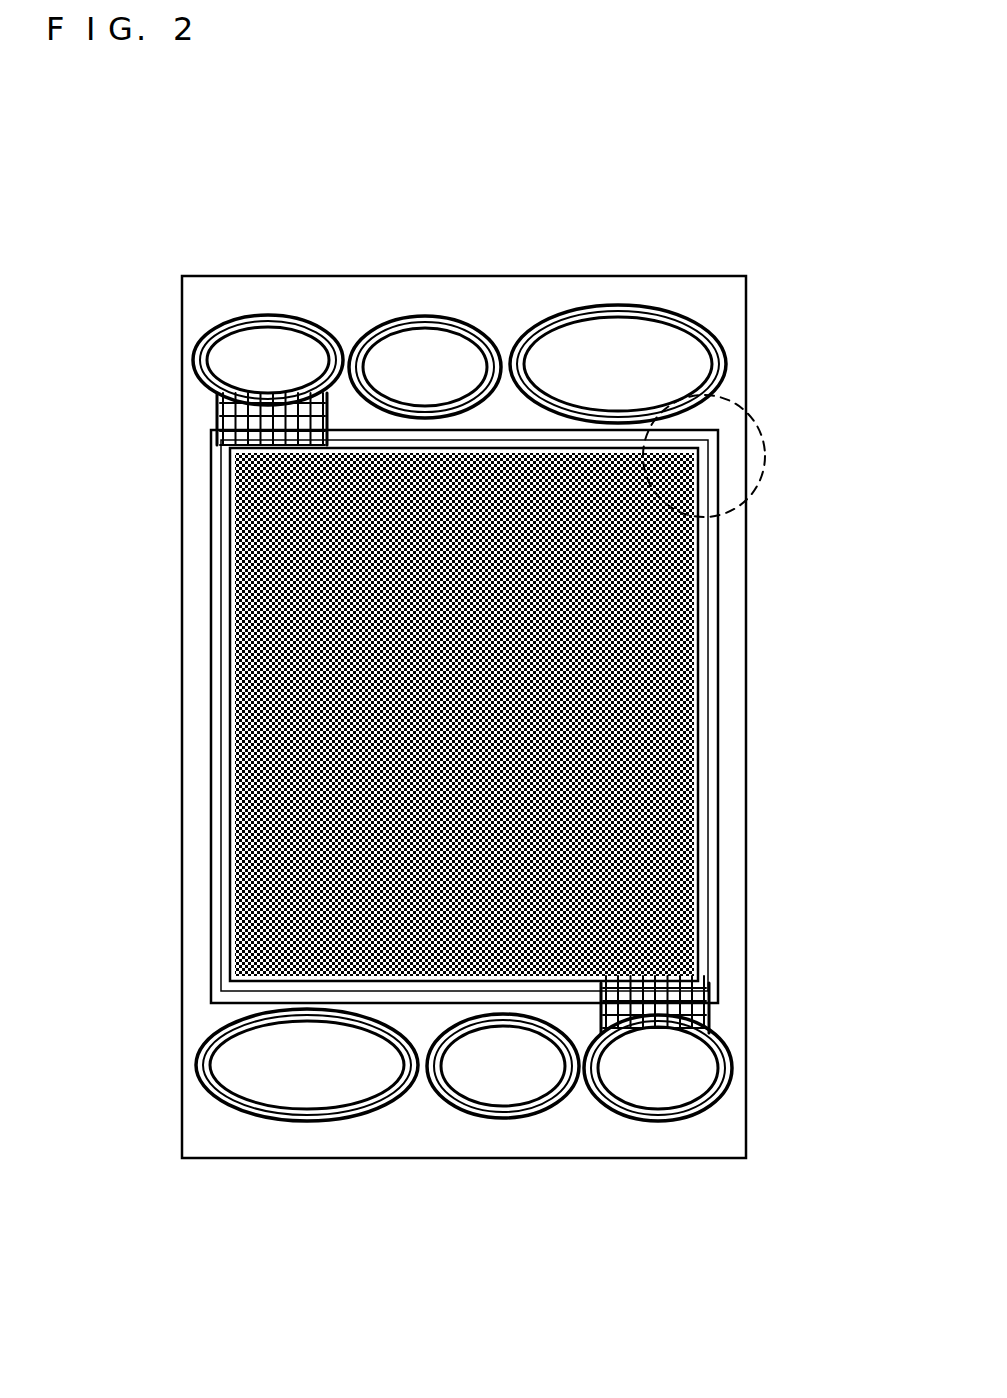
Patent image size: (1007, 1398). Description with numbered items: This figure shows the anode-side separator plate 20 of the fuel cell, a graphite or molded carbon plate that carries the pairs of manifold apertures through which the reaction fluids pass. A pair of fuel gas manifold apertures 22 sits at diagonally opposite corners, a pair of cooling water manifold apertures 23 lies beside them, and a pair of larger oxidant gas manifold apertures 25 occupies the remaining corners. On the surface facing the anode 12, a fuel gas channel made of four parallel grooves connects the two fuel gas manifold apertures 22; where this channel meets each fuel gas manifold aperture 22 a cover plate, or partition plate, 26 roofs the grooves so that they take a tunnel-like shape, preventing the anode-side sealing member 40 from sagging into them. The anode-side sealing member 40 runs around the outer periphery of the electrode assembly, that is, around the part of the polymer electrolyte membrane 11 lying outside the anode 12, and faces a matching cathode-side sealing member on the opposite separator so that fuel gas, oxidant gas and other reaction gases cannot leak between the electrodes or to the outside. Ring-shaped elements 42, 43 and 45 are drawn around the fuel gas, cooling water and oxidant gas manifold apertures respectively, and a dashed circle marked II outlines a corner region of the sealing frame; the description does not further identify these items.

The anode-side separator plate 20 is at (459, 186).
The polymer electrolyte membrane 11 is at (207, 785).
The anode 12 is at (227, 578).
The anode-side sealing member 40 is at (690, 448).
The enlarged portion II is at (752, 470).
The fuel gas manifold apertures 22 is at (250, 352).
The cooling water manifold apertures 23 is at (412, 345).
The oxidant gas manifold apertures 25 is at (605, 345).
The first sealing ring 42 is at (192, 334).
The second sealing ring 43 is at (473, 317).
The third sealing ring 45 is at (692, 320).
The cover plate 26 is at (222, 416).